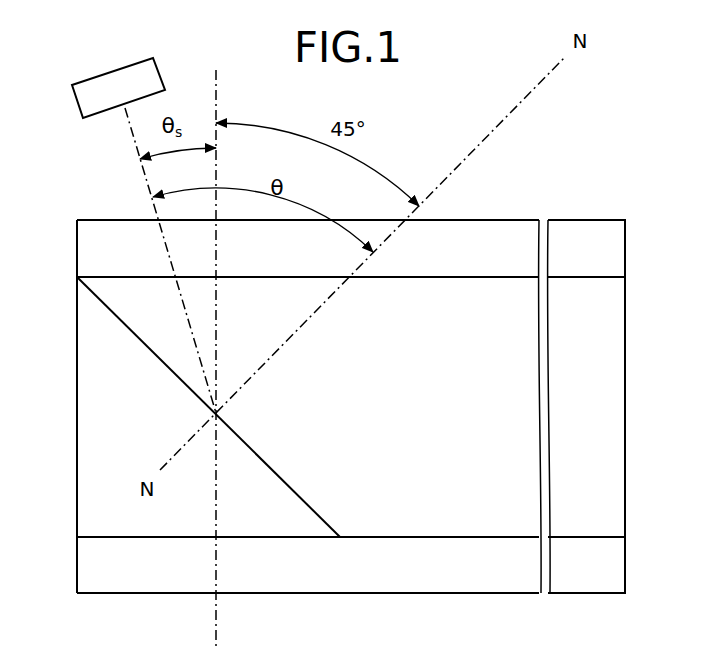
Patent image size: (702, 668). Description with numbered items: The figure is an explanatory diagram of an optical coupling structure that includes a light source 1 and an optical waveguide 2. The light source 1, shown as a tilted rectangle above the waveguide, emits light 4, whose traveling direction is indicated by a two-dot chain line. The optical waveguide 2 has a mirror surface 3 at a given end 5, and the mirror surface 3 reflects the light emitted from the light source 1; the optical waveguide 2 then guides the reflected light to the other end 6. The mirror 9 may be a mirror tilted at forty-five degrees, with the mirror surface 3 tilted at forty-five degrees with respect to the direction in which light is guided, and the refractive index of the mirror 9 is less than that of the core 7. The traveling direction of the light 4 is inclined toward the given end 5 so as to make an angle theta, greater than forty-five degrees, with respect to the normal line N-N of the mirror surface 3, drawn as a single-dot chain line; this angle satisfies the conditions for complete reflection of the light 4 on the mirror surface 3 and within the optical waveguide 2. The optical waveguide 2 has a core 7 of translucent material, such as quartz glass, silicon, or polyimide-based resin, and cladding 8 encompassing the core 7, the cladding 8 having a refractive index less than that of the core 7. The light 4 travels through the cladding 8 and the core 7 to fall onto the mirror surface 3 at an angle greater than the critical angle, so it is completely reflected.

The light source 1 is at (120, 83).
The optical waveguide 2 is at (603, 219).
The mirror surface 3 is at (107, 302).
The light 4 is at (132, 153).
The given end 5 is at (77, 331).
The other end 6 is at (628, 330).
The core 7 is at (616, 452).
The cladding 8 is at (616, 245).
The mirror 9 is at (85, 452).